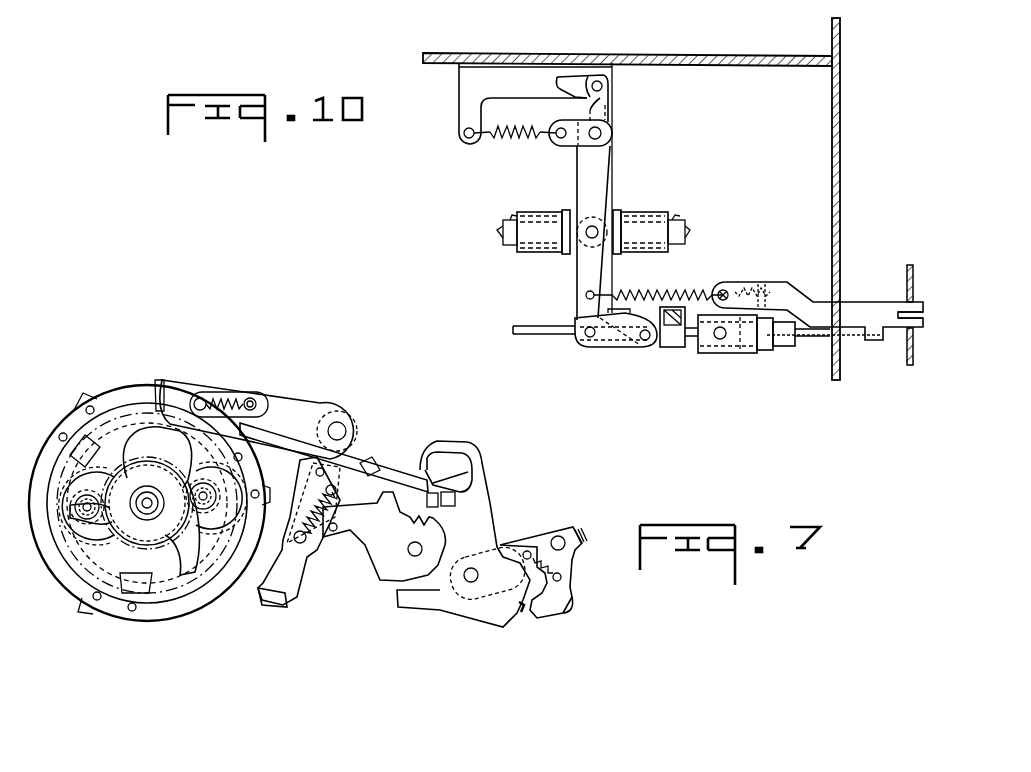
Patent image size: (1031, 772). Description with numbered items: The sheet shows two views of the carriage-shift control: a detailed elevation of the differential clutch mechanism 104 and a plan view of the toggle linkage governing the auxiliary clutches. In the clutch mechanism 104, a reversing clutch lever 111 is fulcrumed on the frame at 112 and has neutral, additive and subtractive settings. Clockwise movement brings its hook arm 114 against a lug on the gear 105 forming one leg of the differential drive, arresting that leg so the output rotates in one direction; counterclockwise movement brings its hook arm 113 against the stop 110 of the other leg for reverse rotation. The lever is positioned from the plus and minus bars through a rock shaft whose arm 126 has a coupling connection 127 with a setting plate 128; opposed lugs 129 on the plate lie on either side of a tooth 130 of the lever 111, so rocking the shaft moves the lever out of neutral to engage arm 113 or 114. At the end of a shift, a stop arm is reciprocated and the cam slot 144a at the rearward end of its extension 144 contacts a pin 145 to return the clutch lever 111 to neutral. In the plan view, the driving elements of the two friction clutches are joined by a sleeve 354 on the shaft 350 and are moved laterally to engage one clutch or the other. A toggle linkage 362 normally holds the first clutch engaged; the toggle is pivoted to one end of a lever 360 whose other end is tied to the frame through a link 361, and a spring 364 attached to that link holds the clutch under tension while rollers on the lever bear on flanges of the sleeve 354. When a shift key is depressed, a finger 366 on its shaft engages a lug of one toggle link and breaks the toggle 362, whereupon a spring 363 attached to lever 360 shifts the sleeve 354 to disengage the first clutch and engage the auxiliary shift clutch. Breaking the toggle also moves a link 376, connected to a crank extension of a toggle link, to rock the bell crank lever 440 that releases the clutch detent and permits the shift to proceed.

In FIG. 10, the link 361 is at (600, 106).
In FIG. 10, the spring 364 is at (490, 140).
In FIG. 10, the lever 360 is at (582, 188).
In FIG. 10, the sleeve 354 is at (658, 204).
In FIG. 10, the shaft 350 is at (690, 228).
In FIG. 10, the spring 363 is at (650, 290).
In FIG. 10, the link 376 is at (895, 275).
In FIG. 10, the bell crank lever 440 is at (925, 315).
In FIG. 10, the toggle linkage 362 is at (625, 350).
In FIG. 10, the finger 366 is at (672, 350).
In FIG. 7, the differential clutch mechanism 104 is at (146, 643).
In FIG. 7, the gear 105 is at (78, 588).
In FIG. 7, the stop 110 is at (120, 478).
In FIG. 7, the hook arm 113 is at (325, 385).
In FIG. 7, the fulcrum 112 is at (346, 428).
In FIG. 7, the reversing clutch lever 111 is at (397, 470).
In FIG. 7, the pin 145 is at (372, 470).
In FIG. 7, the cam slot 144a is at (296, 462).
In FIG. 7, the extension 144 is at (298, 517).
In FIG. 7, the hook arm 114 is at (284, 587).
In FIG. 7, the lugs 129 is at (445, 490).
In FIG. 7, the tooth 130 is at (473, 513).
In FIG. 7, the setting plate 128 is at (485, 507).
In FIG. 7, the arm 126 is at (515, 548).
In FIG. 7, the coupling connection 127 is at (565, 597).